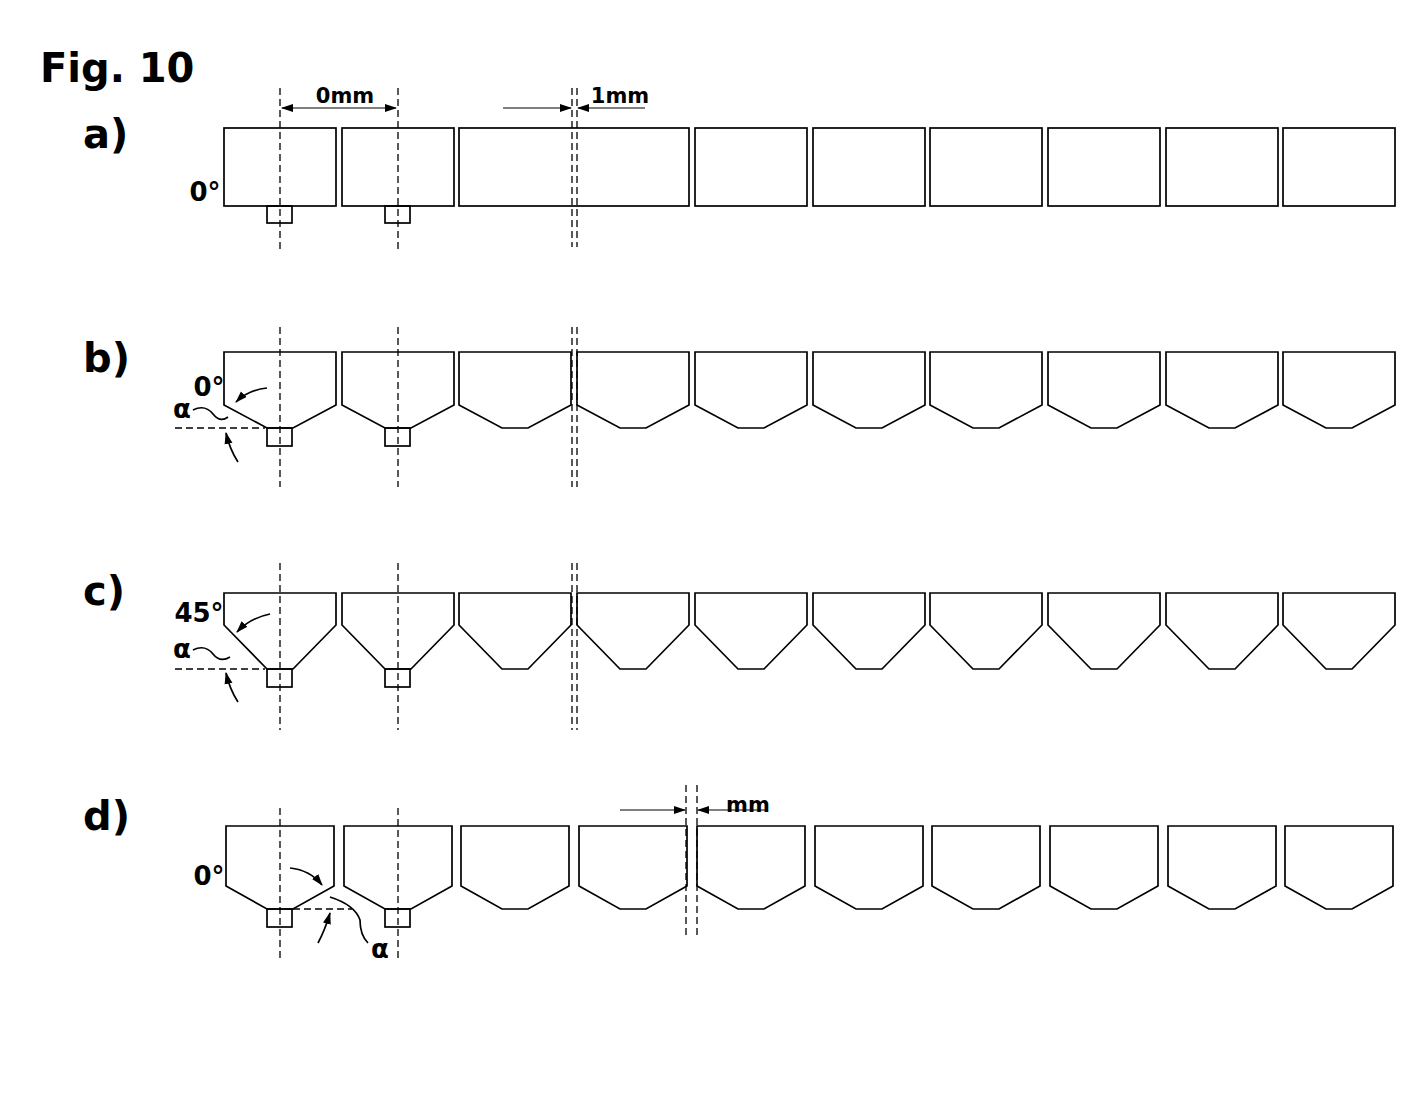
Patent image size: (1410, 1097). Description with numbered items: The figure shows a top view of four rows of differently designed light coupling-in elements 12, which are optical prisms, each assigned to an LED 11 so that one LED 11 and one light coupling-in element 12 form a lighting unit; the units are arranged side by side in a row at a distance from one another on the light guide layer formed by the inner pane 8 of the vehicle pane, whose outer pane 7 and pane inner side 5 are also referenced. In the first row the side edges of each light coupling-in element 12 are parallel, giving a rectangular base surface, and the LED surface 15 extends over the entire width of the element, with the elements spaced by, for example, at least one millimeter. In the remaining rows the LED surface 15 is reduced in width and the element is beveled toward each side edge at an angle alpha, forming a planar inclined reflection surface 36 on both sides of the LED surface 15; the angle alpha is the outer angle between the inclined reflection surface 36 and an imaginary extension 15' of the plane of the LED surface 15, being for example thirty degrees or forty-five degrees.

The pane inner side 5 is at (224, 150).
The outer pane 7 is at (980, 128).
The inner pane 8 is at (487, 658).
The LED 11 is at (287, 215).
The light coupling-in element 12 is at (252, 126).
The LED surface 15 is at (783, 557).
The imaginary extension of the plane of the LED surface 15' is at (193, 580).
The inclined reflection surface 36 is at (256, 416).